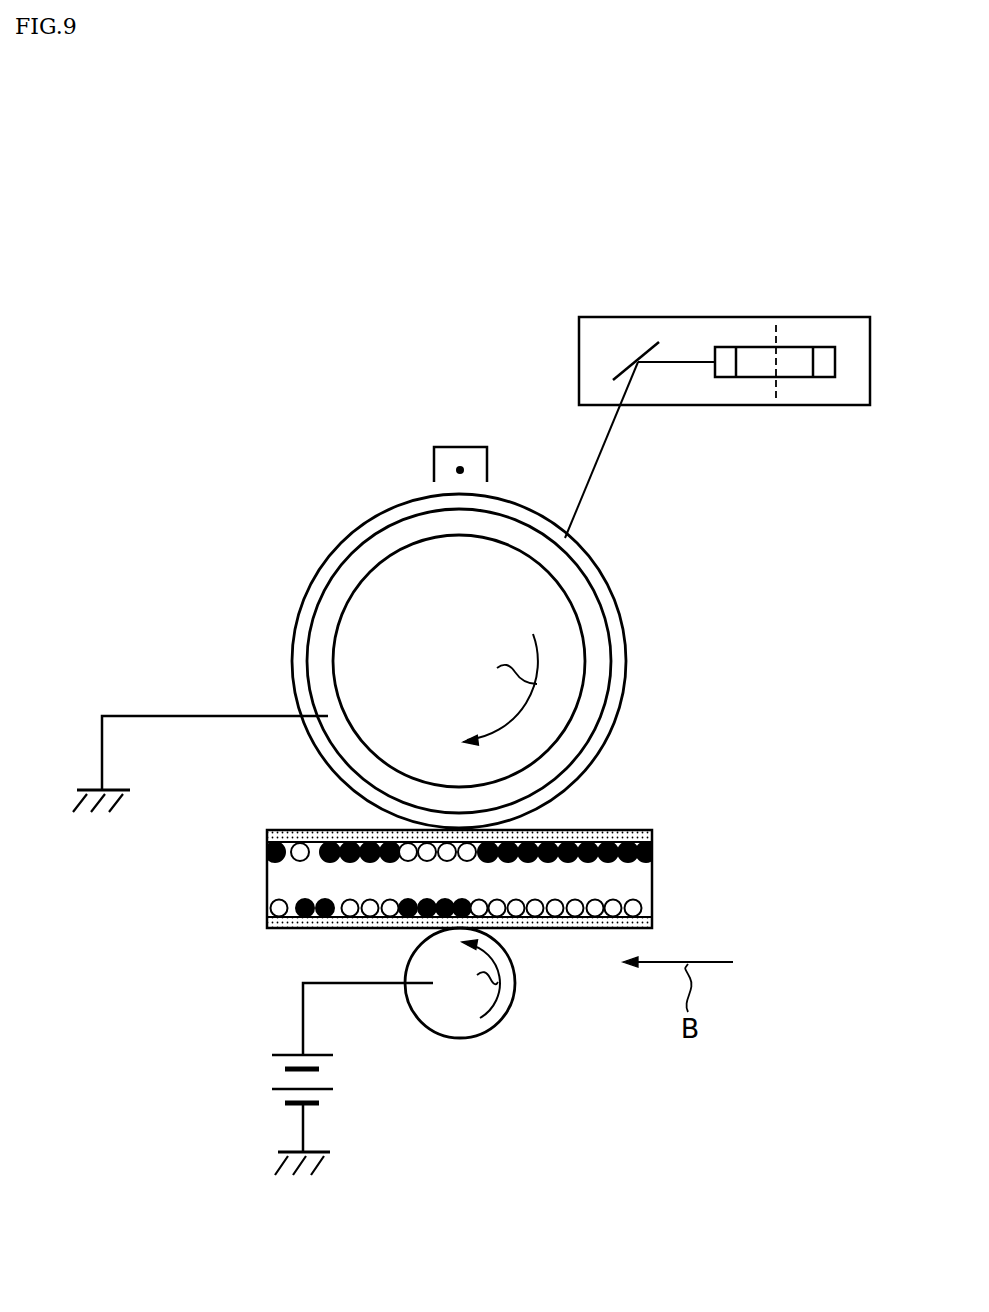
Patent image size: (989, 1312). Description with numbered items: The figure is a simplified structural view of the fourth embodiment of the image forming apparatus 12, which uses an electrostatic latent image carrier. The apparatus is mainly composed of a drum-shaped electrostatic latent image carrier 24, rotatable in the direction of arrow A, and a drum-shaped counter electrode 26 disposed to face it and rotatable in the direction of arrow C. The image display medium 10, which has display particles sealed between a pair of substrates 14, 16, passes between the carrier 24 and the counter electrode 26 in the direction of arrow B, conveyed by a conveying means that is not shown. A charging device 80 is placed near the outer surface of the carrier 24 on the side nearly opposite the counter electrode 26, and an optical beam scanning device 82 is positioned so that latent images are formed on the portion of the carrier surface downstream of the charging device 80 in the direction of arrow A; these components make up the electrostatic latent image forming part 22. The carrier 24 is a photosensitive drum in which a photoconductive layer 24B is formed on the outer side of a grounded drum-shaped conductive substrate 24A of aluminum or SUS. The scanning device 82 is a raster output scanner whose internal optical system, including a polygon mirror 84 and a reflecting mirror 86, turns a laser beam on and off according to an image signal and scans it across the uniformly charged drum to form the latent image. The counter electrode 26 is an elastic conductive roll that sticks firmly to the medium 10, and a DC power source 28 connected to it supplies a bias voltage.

The image forming apparatus 12 is at (562, 163).
The electrostatic latent image forming part 22 is at (528, 298).
The reflecting mirror 86 is at (640, 355).
The optical beam scanning device 82 is at (840, 317).
The polygon mirror 84 is at (793, 378).
The charging device 80 is at (460, 447).
The electrostatic latent image carrier 24 is at (626, 607).
The conductive substrate 24A is at (317, 675).
The photoconductive layer 24B is at (614, 705).
The image display medium 10 is at (650, 808).
The front substrate 14 is at (653, 831).
The rear substrate 16 is at (653, 917).
The counter electrode 26 is at (505, 1010).
The DC power source 28 is at (255, 1090).